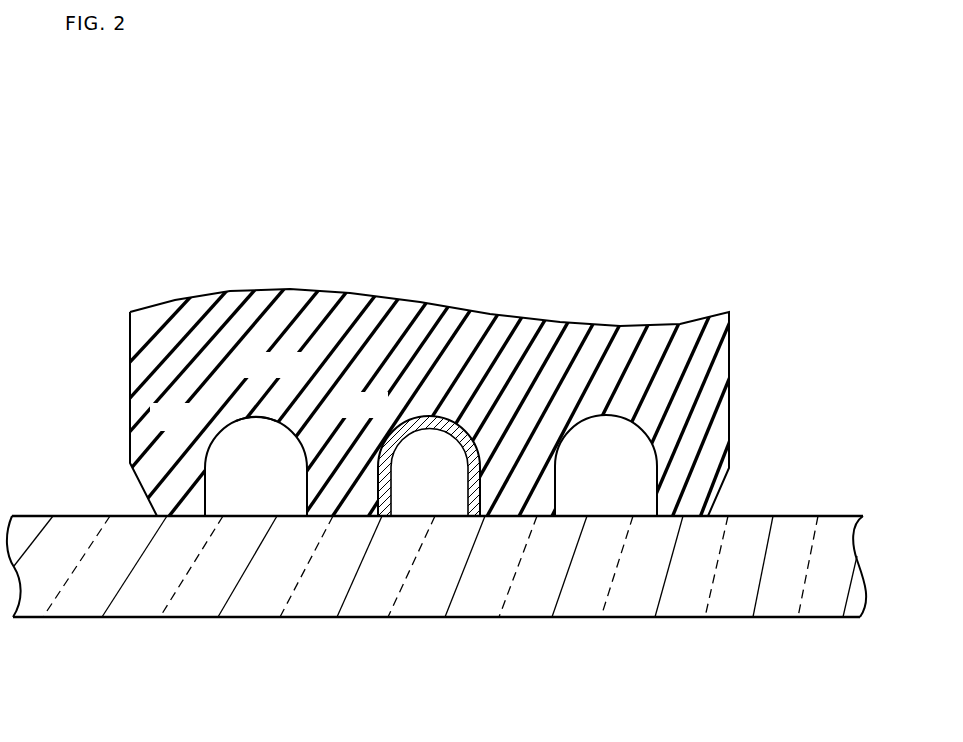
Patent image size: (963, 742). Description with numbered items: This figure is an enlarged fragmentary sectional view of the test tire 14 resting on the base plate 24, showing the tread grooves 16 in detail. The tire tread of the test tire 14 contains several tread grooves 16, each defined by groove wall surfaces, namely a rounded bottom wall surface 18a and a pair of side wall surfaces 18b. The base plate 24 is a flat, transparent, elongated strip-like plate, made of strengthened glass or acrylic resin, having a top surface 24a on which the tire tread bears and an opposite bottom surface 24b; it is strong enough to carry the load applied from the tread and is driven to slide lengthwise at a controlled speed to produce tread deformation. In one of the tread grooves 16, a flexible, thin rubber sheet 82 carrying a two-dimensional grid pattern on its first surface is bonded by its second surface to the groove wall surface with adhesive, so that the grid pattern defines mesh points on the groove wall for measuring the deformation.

The test tire 14 is at (712, 347).
The tread grooves 16 is at (278, 487).
The rounded bottom wall surface 18a is at (272, 421).
The side wall surfaces 18b is at (206, 490).
The base plate 24 is at (586, 598).
The top surface 24a is at (749, 516).
The bottom surface 24b is at (738, 618).
The rubber sheet 82 is at (470, 492).